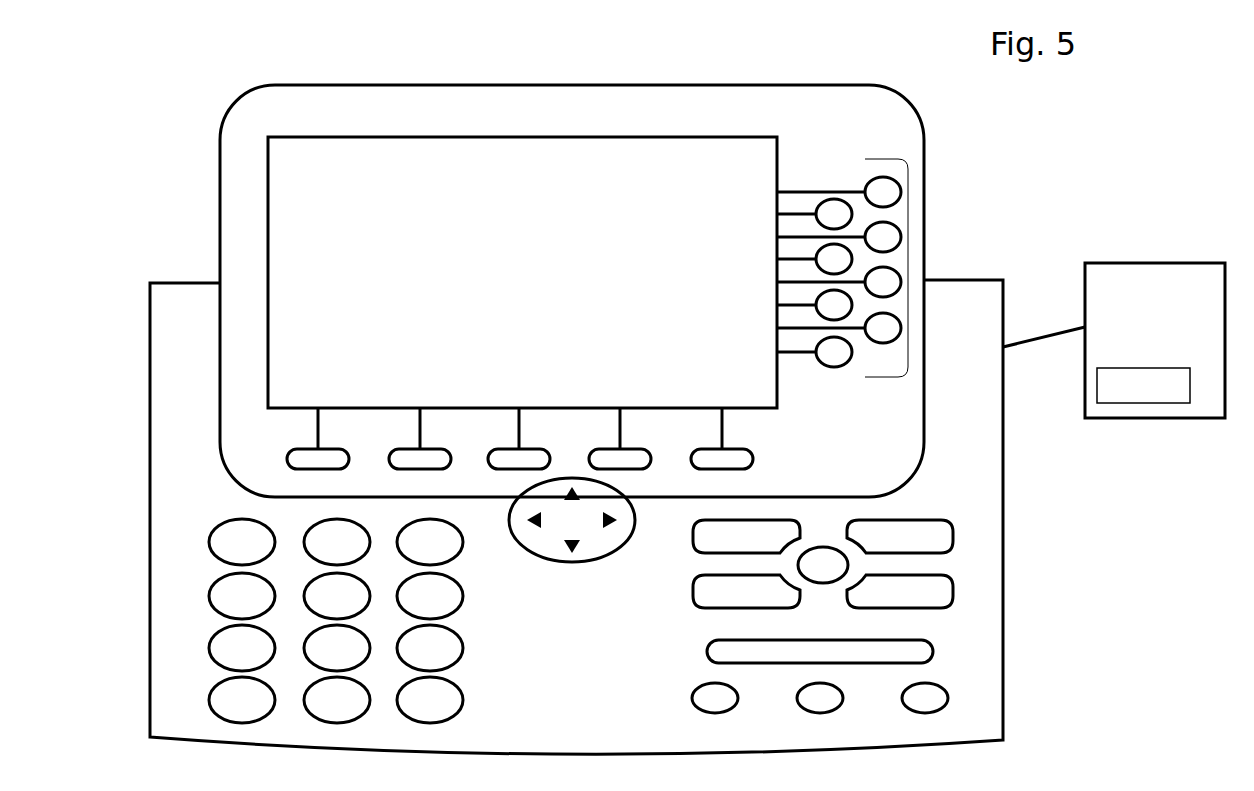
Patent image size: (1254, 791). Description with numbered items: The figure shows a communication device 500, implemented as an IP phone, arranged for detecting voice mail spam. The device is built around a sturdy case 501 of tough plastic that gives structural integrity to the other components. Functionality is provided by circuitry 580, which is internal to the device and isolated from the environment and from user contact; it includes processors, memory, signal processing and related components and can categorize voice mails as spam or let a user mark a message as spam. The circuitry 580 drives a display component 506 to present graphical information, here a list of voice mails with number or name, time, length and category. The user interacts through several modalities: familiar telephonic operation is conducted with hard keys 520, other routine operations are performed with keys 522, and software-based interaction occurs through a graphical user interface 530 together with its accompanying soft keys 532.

The communication device 500 is at (1044, 211).
The case 501 is at (146, 356).
The graphical user interface 530 is at (572, 291).
The display component 506 is at (522, 272).
The soft keys 532 is at (913, 205).
The hard keys 520 is at (202, 698).
The keys 522 is at (957, 690).
The circuitry 580 is at (1155, 340).